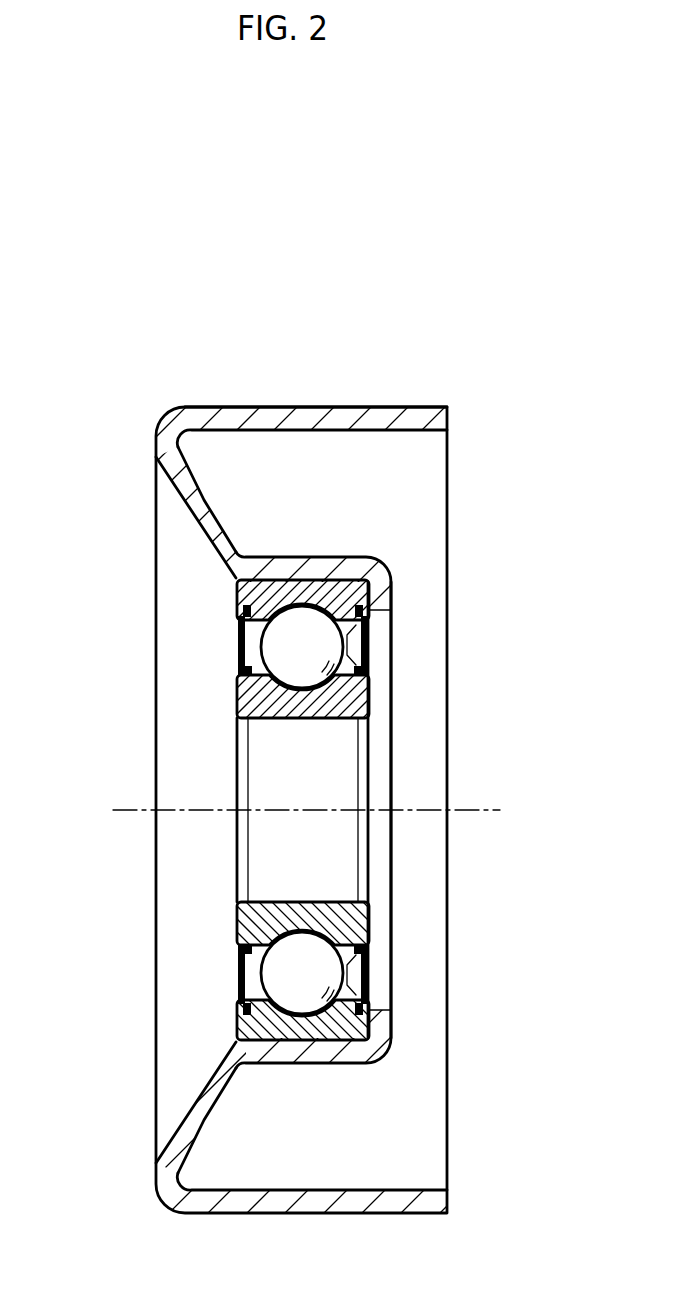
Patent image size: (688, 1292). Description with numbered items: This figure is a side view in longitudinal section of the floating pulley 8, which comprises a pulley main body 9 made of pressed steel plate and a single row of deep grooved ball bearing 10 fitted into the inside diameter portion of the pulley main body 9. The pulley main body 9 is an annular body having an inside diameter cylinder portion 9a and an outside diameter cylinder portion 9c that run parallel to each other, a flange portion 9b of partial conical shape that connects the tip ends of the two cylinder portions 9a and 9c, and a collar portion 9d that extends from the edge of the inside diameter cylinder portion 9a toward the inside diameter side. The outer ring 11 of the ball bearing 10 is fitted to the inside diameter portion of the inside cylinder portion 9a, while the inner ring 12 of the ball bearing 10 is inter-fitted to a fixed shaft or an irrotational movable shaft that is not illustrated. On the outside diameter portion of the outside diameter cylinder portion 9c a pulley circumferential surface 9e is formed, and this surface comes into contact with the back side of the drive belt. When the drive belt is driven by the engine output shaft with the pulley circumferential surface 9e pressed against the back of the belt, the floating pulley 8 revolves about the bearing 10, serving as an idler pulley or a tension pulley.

The floating pulley 8 is at (105, 366).
The pulley main body 9 is at (471, 372).
The inside diameter cylinder portion 9a is at (337, 565).
The flange portion 9b is at (187, 490).
The outside diameter cylinder portion 9c is at (260, 415).
The collar portion 9d is at (380, 600).
The pulley circumferential surface 9e is at (373, 407).
The deep grooved ball bearing 10 is at (396, 661).
The outer ring 11 is at (260, 595).
The inner ring 12 is at (257, 698).